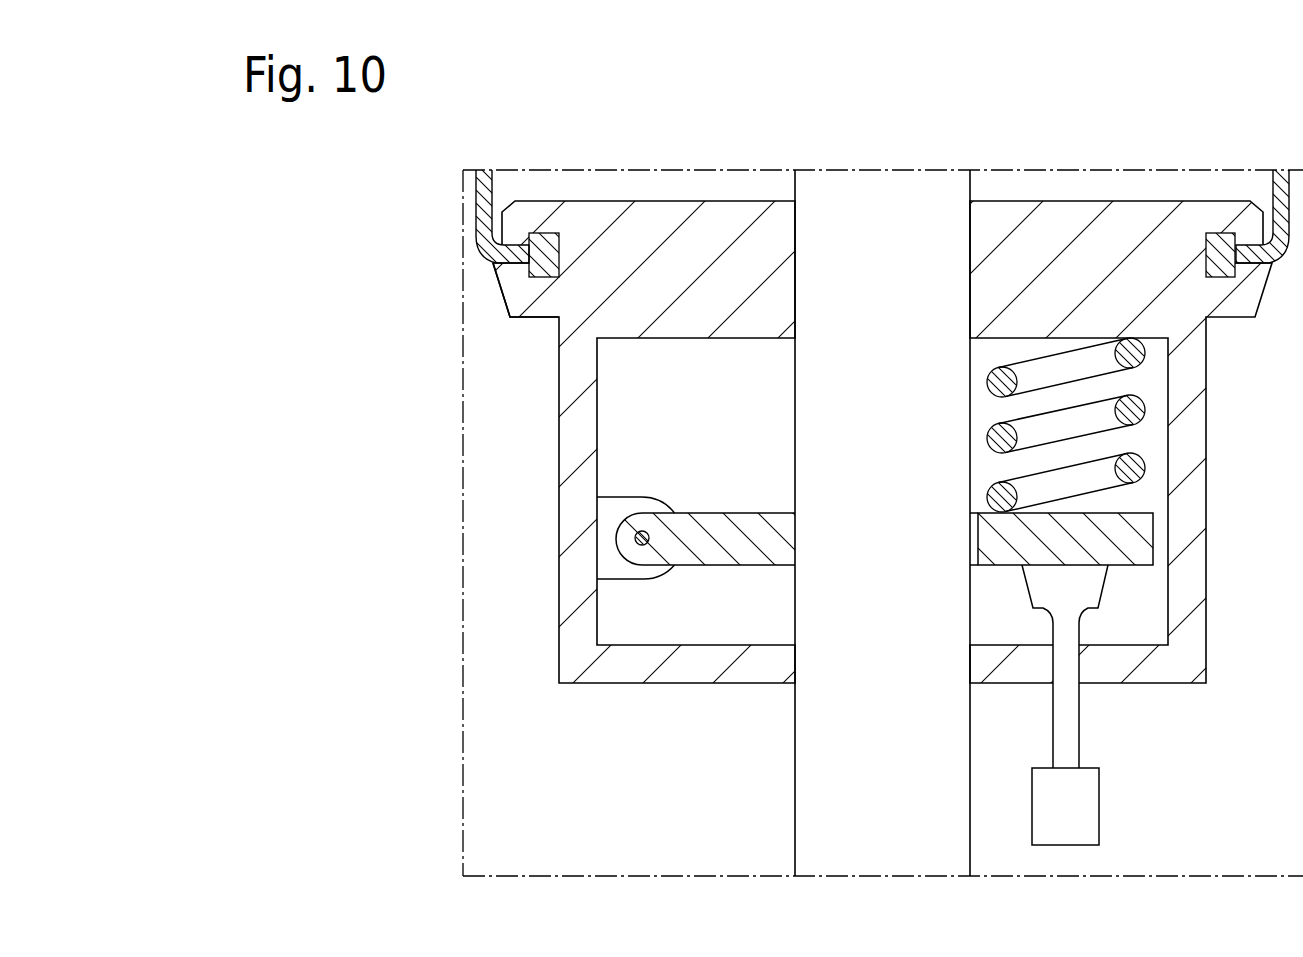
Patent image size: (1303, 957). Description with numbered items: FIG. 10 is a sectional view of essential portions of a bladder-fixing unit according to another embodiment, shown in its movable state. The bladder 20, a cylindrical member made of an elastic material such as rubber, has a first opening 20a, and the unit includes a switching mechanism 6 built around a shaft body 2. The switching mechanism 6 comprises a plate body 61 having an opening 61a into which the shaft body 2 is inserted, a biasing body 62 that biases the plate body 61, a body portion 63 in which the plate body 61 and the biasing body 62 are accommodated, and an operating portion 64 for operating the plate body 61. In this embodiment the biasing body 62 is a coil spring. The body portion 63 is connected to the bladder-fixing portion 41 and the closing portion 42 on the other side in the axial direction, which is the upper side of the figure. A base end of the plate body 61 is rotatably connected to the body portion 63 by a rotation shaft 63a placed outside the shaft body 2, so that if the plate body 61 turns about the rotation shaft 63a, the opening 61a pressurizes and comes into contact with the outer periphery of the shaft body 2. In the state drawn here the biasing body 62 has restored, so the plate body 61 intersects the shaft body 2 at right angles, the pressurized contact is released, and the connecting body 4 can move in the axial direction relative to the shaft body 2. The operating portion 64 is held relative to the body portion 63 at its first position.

The shaft body 2 is at (786, 819).
The connecting body 4 is at (490, 811).
The switching mechanism 6 is at (673, 438).
The bladder 20 is at (496, 174).
The first opening 20a is at (1232, 247).
The bladder-fixing portion 41 is at (500, 294).
The closing portion 42 is at (752, 201).
The plate body 61 is at (709, 504).
The opening 61a is at (980, 536).
The biasing body 62 is at (978, 434).
The body portion 63 is at (550, 521).
The rotation shaft 63a is at (642, 530).
The operating portion 64 is at (1095, 736).